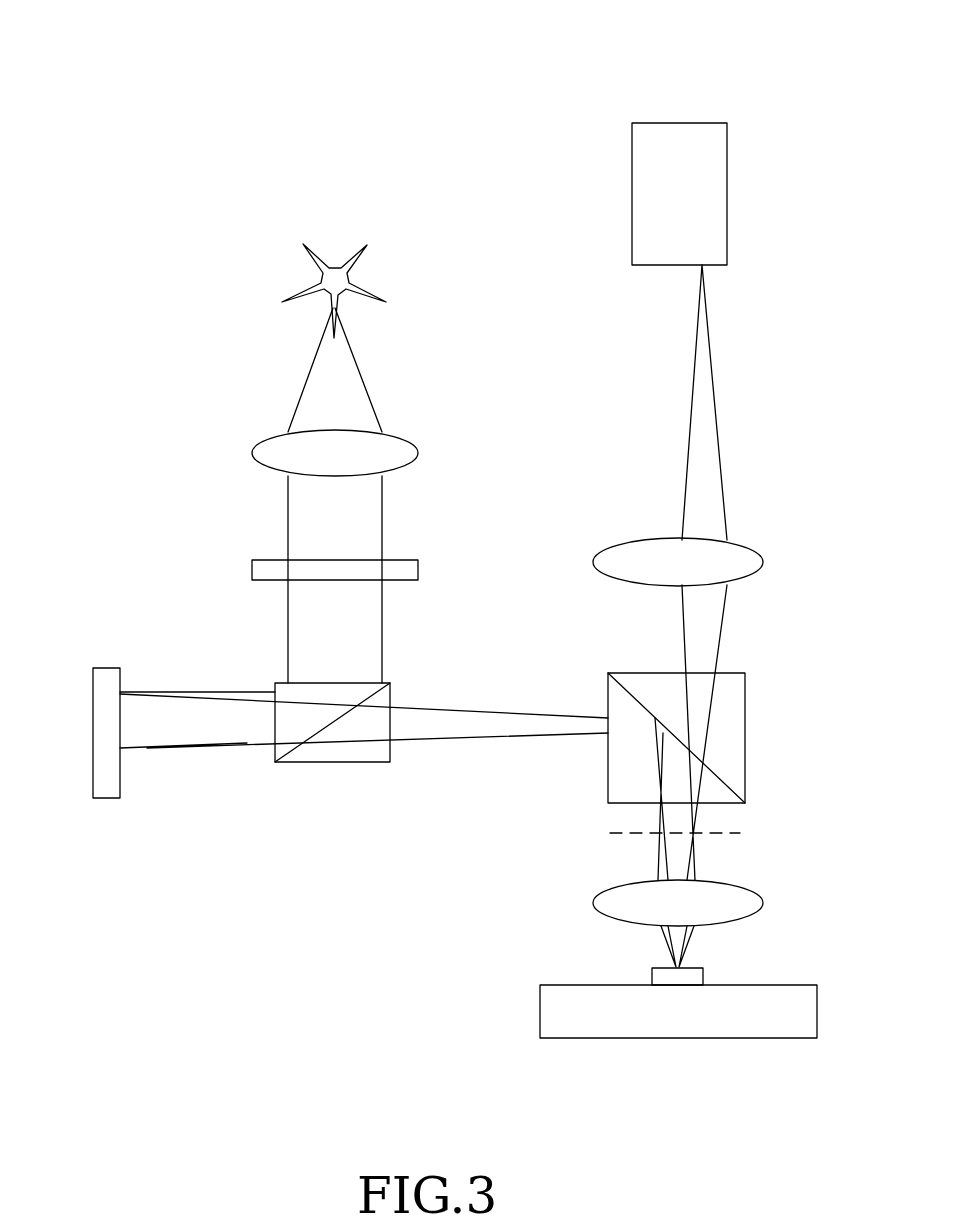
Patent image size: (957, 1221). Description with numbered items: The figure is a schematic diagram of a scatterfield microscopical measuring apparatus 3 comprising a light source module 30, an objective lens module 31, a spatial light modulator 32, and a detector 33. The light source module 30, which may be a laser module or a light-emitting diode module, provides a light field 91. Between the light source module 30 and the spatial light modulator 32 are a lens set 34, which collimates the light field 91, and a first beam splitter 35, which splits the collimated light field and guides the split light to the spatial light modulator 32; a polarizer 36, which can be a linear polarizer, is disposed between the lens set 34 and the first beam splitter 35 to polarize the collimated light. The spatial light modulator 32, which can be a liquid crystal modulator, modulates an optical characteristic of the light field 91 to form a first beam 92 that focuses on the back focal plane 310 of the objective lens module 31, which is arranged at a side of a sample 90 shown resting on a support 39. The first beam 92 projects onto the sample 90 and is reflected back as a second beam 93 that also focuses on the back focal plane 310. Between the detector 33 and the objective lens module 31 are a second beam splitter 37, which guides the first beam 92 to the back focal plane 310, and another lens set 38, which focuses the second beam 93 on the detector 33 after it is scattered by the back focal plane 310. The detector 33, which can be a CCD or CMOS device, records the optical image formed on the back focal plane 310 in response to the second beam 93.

The scatterfield microscopical measuring apparatus 3 is at (229, 120).
The light source module 30 is at (318, 280).
The light field 91 is at (302, 395).
The lens set 34 is at (258, 455).
The polarizer 36 is at (258, 573).
The first beam splitter 35 is at (355, 750).
The spatial light modulator 32 is at (102, 692).
The first beam 92 is at (225, 698).
The detector 33 is at (645, 190).
The lens set 38 is at (608, 565).
The second beam splitter 37 is at (608, 690).
The back focal plane 310 is at (740, 833).
The objective lens module 31 is at (605, 902).
The second beam 93 is at (683, 943).
The sample 90 is at (655, 973).
The stage 39 is at (542, 1022).